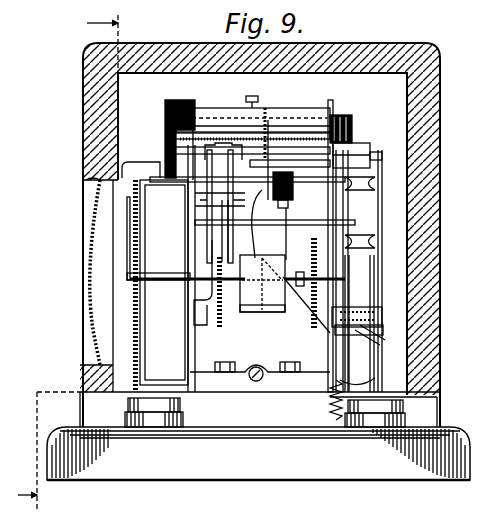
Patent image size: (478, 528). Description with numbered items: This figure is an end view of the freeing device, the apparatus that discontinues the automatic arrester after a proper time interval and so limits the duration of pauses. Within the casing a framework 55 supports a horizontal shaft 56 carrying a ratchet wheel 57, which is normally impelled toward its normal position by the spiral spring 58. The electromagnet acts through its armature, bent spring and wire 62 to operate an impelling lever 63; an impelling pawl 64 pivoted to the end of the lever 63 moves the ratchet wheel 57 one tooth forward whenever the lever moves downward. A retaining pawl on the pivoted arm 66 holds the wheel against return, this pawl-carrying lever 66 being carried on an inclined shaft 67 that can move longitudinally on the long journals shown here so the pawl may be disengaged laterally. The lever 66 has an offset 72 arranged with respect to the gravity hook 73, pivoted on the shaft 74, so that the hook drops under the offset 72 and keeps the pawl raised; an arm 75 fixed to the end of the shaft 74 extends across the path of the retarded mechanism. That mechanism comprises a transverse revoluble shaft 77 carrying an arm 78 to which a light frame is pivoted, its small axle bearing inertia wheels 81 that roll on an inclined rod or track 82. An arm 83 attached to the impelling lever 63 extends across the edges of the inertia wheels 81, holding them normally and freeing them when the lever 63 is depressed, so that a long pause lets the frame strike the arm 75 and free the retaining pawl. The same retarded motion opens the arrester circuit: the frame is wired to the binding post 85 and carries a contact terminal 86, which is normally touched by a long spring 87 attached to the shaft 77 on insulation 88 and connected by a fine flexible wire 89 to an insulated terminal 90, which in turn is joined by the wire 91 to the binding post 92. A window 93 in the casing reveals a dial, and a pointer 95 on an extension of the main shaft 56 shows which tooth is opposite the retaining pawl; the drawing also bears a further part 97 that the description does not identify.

The framework 55 is at (334, 110).
The horizontal shaft 56 is at (300, 283).
The ratchet wheel 57 is at (445, 120).
The spiral spring 58 is at (311, 249).
The wire 62 is at (240, 220).
The impelling lever 63 is at (222, 172).
The impelling pawl 64 is at (235, 195).
The pivoted arm 66 is at (240, 206).
The shaft 67 is at (378, 225).
The offset 72 is at (272, 204).
The gravity hook 73 is at (265, 170).
The shaft 74 is at (220, 122).
The arm 75 is at (338, 204).
The transverse revoluble shaft 77 is at (240, 165).
The arm 78 is at (335, 170).
The inertia wheels 81 is at (375, 368).
The inclined rod or track 82 is at (362, 307).
The arm 83 is at (250, 240).
The binding post 85 is at (372, 425).
The contact terminal 86 is at (288, 172).
The long spring 87 is at (292, 182).
The insulation 88 is at (305, 198).
The fine flexible wire 89 is at (266, 110).
The insulated terminal 90 is at (168, 102).
The wire 91 is at (122, 303).
The binding post 92 is at (148, 417).
The window 93 is at (90, 335).
The pointer 95 is at (125, 232).
The panel 97 is at (138, 348).